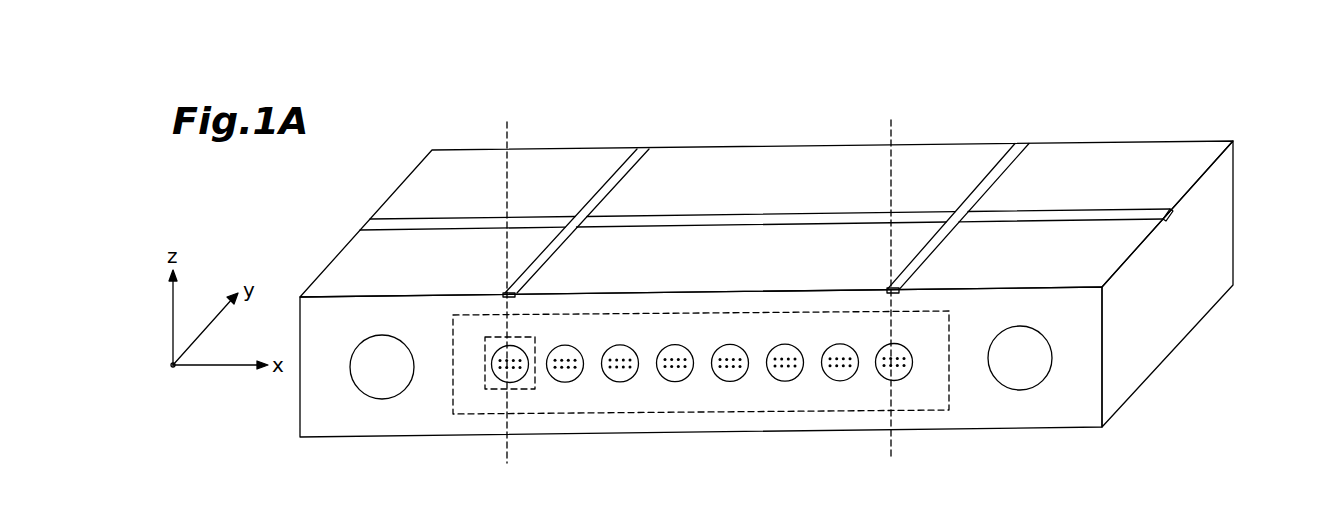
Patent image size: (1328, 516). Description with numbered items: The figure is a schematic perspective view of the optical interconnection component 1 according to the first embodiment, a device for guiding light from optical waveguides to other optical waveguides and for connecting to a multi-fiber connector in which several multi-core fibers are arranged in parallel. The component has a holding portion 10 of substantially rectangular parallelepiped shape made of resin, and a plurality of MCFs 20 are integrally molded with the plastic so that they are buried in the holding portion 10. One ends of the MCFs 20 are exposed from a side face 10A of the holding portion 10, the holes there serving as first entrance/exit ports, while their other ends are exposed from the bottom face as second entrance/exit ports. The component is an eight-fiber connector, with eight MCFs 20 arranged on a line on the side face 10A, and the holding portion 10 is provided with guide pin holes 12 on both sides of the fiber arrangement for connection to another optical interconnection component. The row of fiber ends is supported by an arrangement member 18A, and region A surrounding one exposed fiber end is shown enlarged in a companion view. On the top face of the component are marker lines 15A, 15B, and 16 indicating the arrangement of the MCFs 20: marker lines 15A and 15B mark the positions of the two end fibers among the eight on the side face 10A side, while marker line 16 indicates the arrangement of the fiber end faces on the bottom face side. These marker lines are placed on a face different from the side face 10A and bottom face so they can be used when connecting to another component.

The optical interconnection component 1 is at (1276, 125).
The holding portion 10 is at (1223, 213).
The side face 10A is at (978, 415).
The guide pin holes 12 is at (380, 399).
The marker line 15A is at (618, 170).
The marker line 15B is at (992, 170).
The marker line 16 is at (1095, 213).
The arrangement member 18A is at (802, 398).
The MCFs 20 is at (618, 382).
The region A is at (520, 390).